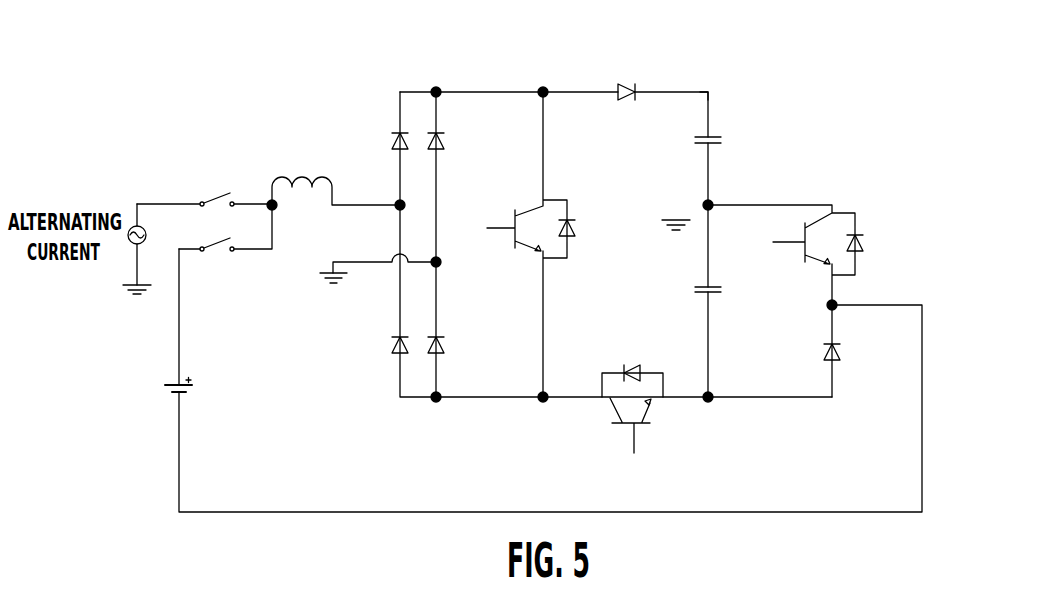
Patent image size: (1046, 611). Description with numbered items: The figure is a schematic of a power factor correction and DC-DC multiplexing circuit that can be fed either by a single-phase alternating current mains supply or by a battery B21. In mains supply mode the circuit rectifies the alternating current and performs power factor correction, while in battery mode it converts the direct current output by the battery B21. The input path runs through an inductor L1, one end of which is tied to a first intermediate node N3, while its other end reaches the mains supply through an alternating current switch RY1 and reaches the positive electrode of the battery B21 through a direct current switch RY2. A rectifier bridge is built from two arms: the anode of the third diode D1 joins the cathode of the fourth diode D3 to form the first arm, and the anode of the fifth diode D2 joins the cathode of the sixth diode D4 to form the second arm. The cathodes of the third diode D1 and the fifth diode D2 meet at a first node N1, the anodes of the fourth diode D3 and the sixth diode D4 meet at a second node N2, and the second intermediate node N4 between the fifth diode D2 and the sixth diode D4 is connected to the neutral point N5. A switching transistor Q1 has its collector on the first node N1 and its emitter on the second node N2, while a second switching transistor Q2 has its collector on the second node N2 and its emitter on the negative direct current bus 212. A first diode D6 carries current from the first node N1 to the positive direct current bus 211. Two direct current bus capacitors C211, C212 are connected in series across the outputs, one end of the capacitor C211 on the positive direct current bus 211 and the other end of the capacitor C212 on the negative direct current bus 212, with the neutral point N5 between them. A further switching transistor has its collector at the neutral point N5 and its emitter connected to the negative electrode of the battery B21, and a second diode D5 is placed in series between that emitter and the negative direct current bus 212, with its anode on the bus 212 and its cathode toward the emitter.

The positive direct current bus 211 is at (711, 100).
The negative direct current bus 212 is at (712, 400).
The inductor L1 is at (336, 175).
The alternating current switch RY1 is at (217, 184).
The direct current switch RY2 is at (217, 267).
The battery B21 is at (198, 393).
The third diode D1 is at (382, 144).
The fifth diode D2 is at (455, 144).
The fourth diode D3 is at (384, 345).
The sixth diode D4 is at (450, 345).
The second diode D5 is at (813, 357).
The first diode D6 is at (629, 109).
The switching transistor Q1 is at (534, 244).
The switching transistor Q2 is at (639, 414).
The direct current bus capacitor C211 is at (731, 147).
The direct current bus capacitor C212 is at (727, 309).
The first node N1 is at (493, 76).
The second node N2 is at (495, 414).
The first intermediate node N3 is at (602, 243).
The second intermediate node N4 is at (451, 265).
The neutral point N5 is at (391, 269).